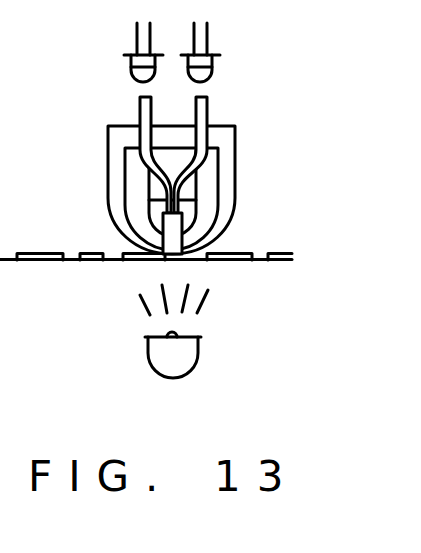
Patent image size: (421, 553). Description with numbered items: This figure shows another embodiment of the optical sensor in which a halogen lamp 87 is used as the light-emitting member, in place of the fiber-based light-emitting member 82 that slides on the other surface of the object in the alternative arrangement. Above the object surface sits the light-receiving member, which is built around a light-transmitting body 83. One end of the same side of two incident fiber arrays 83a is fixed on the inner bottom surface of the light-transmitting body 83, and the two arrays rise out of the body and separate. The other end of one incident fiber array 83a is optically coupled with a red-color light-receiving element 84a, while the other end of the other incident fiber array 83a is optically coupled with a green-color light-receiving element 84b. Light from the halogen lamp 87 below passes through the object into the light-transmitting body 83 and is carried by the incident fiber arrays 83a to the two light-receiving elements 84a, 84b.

The light-emitting member 82 is at (237, 169).
The light-transmitting body 83 is at (184, 241).
The incident fiber arrays 83a is at (140, 111).
The red-color light-receiving element 84a is at (131, 63).
The green-color light-receiving element 84b is at (212, 63).
The halogen lamp 87 is at (198, 362).